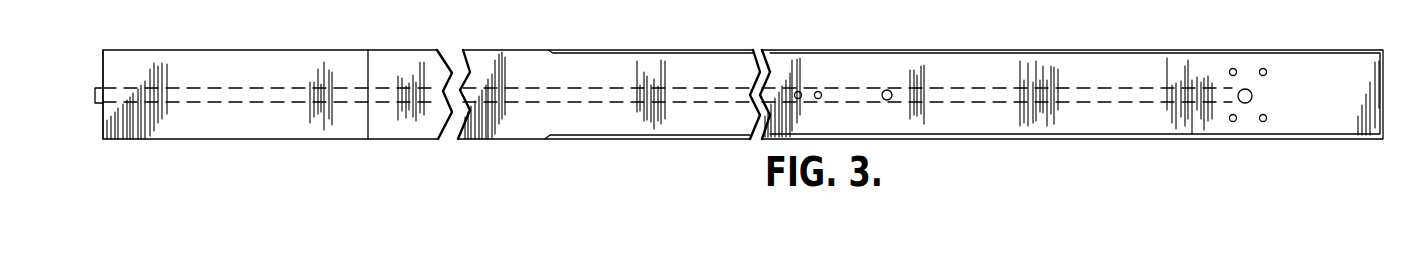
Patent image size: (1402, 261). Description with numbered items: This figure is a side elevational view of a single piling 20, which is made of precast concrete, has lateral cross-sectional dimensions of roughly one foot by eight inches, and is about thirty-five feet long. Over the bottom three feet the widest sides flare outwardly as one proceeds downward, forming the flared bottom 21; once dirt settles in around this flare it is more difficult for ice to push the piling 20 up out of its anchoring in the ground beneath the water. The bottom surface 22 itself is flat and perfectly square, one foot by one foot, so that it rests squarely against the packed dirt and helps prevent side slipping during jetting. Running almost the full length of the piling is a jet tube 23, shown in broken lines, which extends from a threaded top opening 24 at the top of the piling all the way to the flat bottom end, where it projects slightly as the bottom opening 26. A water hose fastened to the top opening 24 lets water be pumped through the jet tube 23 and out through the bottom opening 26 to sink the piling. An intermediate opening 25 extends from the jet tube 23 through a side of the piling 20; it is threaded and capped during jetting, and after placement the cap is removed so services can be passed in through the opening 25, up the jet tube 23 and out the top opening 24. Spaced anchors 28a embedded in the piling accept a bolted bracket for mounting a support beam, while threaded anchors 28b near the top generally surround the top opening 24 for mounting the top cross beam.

The piling 20 is at (668, 139).
The flared bottom 21 is at (365, 144).
The bottom surface 22 is at (103, 50).
The jet tube 23 is at (1007, 88).
The top opening 24 is at (1252, 92).
The intermediate opening 25 is at (888, 90).
The bottom opening 26 is at (95, 90).
The spaced anchors 28a is at (818, 91).
The threaded anchors 28b is at (1262, 122).